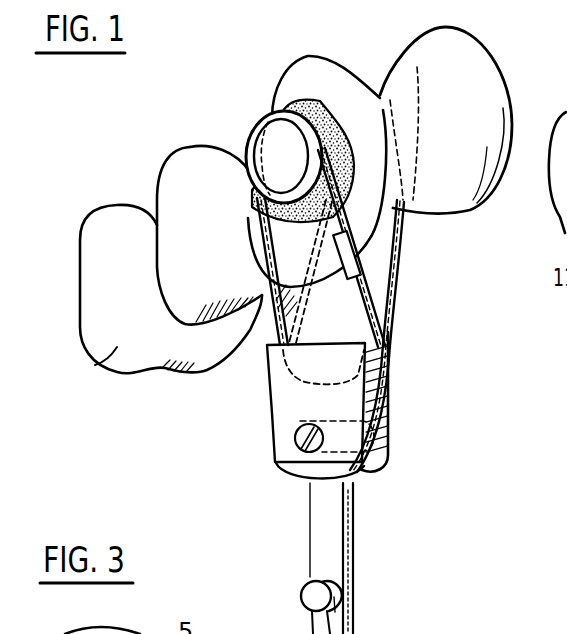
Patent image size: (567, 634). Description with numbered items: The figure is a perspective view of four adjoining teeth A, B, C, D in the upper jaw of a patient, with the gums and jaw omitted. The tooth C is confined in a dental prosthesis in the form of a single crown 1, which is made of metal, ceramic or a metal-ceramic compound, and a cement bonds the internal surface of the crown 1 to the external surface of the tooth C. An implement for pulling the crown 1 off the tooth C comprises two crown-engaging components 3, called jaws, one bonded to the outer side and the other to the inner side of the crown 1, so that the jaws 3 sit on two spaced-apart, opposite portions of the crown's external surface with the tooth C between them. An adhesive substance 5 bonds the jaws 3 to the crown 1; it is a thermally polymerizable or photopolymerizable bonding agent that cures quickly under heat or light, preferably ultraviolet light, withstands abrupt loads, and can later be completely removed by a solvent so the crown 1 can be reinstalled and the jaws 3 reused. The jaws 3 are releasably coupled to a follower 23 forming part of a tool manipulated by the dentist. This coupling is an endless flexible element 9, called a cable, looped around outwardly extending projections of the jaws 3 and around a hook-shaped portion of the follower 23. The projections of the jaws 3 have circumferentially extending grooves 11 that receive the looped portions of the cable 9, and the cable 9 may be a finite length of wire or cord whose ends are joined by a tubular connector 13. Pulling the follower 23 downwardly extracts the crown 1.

The crown 1 is at (328, 265).
The crown-engaging components 3 is at (247, 148).
The adhesive substance 5 is at (340, 112).
The endless flexible element 9 is at (397, 297).
The grooves 11 is at (262, 224).
The connector 13 is at (395, 263).
The follower 23 is at (385, 448).
The tooth A is at (107, 362).
The tooth B is at (210, 297).
The tooth C is at (270, 338).
The tooth D is at (478, 103).